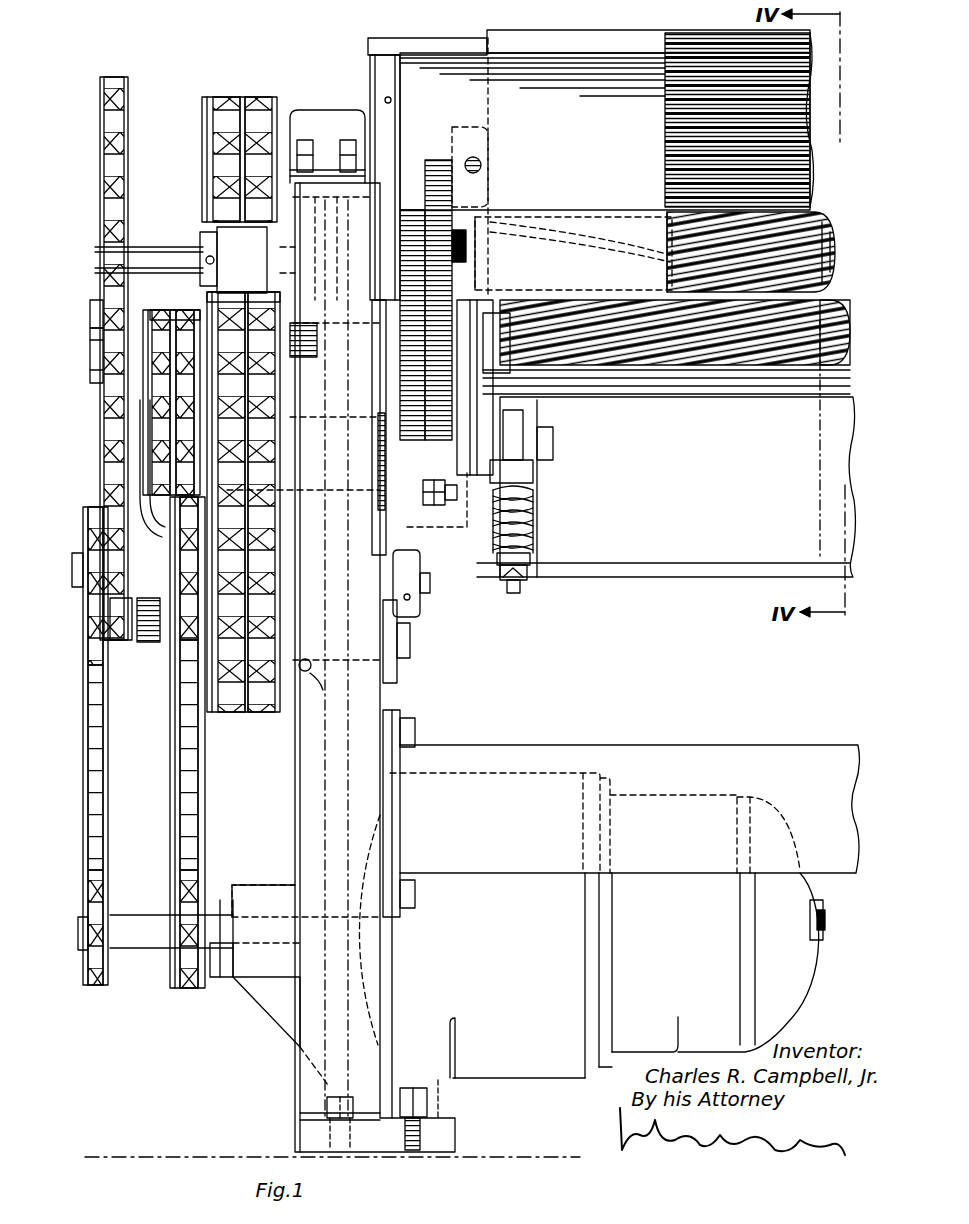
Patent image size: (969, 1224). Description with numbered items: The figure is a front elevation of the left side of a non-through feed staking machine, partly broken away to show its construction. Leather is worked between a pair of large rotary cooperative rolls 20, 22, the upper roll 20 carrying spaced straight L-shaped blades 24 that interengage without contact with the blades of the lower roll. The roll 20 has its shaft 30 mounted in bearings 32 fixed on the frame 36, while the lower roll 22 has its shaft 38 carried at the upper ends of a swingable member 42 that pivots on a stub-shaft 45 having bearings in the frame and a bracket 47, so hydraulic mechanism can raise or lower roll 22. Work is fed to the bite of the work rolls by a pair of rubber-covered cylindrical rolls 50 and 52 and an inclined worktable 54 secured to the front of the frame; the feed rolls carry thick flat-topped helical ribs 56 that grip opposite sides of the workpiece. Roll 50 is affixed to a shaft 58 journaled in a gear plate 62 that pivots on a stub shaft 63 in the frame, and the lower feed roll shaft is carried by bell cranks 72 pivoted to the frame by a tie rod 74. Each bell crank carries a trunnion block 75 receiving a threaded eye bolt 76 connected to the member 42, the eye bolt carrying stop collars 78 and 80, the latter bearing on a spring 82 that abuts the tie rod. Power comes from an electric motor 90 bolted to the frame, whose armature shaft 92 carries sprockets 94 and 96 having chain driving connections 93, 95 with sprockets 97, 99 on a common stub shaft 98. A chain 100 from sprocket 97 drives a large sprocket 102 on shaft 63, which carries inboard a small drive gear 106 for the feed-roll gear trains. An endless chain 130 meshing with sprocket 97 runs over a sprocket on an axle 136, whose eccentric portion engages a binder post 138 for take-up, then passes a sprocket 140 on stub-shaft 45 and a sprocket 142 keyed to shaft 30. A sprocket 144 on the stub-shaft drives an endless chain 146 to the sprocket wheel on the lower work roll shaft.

The rotary cooperative roll 20 is at (520, 35).
The rotary cooperative roll 22 is at (697, 578).
The blades 24 is at (665, 122).
The shaft 30 is at (402, 125).
The bearings 32 is at (320, 112).
The frame 36 is at (295, 795).
The shaft 38 is at (378, 508).
The swingable member 42 is at (478, 565).
The stub-shaft 45 is at (440, 420).
The bracket 47 is at (107, 487).
The cylindrical roll 50 is at (790, 215).
The cylindrical roll 52 is at (820, 330).
The inclined worktable 54 is at (422, 48).
The ribs 56 is at (830, 225).
The shaft 58 is at (455, 240).
The gear plate 62 is at (385, 200).
The stub shaft 63 is at (165, 248).
The bell cranks 72 is at (465, 455).
The tie rod 74 is at (815, 365).
The trunnion block 75 is at (535, 505).
The eye bolt 76 is at (513, 593).
The stop collar 78 is at (527, 462).
The stop collar 80 is at (530, 560).
The spring 82 is at (530, 537).
The electric motor 90 is at (788, 990).
The armature shaft 92 is at (132, 915).
The chain driving connection 93 is at (108, 765).
The sprocket 94 is at (115, 977).
The chain driving connection 95 is at (200, 810).
The sprocket 96 is at (213, 982).
The sprocket 97 is at (132, 653).
The stub shaft 98 is at (430, 590).
The sprocket 99 is at (143, 638).
The chain 100 is at (105, 282).
The large sprocket 102 is at (105, 195).
The drive gear 106 is at (408, 208).
The endless chain 130 is at (233, 714).
The axle 136 is at (410, 653).
The binder post 138 is at (305, 672).
The sprocket 140 is at (210, 302).
The sprocket 142 is at (202, 125).
The sprocket 144 is at (140, 322).
The endless chain 146 is at (160, 318).